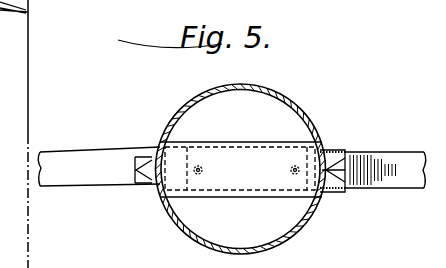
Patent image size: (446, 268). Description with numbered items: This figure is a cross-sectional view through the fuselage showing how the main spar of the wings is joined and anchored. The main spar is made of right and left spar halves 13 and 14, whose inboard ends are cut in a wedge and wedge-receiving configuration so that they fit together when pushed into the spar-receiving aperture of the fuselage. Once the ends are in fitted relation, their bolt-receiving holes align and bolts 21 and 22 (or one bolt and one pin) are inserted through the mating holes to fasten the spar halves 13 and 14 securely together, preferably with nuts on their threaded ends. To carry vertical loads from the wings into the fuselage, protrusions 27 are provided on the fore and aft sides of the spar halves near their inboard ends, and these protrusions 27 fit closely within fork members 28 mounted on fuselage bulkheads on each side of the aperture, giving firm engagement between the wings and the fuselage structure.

The right spar half 13 is at (100, 178).
The left spar half 14 is at (405, 180).
The bolt 21 is at (197, 166).
The bolt 22 is at (297, 166).
The protrusion 27 is at (347, 168).
The fork member 28 is at (136, 158).